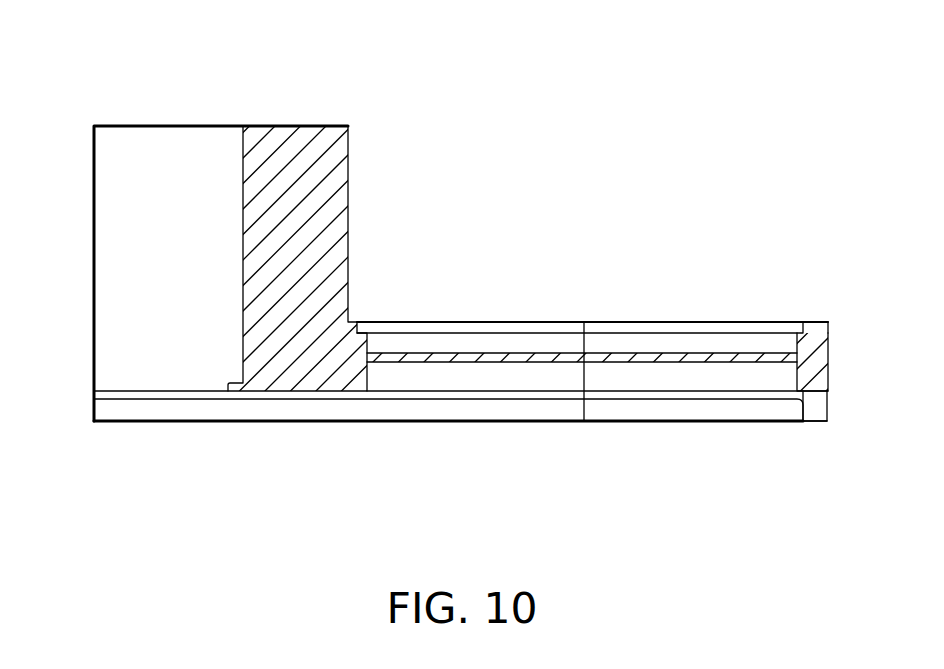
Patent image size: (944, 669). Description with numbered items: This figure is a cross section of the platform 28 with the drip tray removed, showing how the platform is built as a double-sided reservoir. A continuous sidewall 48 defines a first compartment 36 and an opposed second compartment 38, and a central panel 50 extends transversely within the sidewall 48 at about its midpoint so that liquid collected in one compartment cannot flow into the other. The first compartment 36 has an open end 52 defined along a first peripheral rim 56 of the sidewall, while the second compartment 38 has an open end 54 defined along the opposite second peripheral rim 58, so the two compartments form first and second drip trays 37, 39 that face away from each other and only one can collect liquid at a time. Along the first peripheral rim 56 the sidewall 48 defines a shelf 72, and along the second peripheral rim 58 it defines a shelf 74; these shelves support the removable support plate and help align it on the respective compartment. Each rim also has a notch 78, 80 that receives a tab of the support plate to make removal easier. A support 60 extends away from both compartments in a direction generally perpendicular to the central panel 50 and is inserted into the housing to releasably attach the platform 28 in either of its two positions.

The platform 28 is at (140, 96).
The support 60 is at (137, 237).
The shelf 72 is at (448, 328).
The first peripheral rim 56 is at (533, 323).
The open end 52 is at (681, 352).
The central panel 50 is at (637, 360).
The first compartment 36 is at (720, 375).
The first drip tray 37 is at (783, 314).
The notch 78 is at (826, 330).
The second peripheral rim 58 is at (595, 423).
The shelf 74 is at (548, 398).
The sidewall 48 is at (416, 409).
The second compartment 38 is at (701, 424).
The open end 54 is at (762, 410).
The notch 80 is at (815, 410).
The second drip tray 39 is at (812, 434).